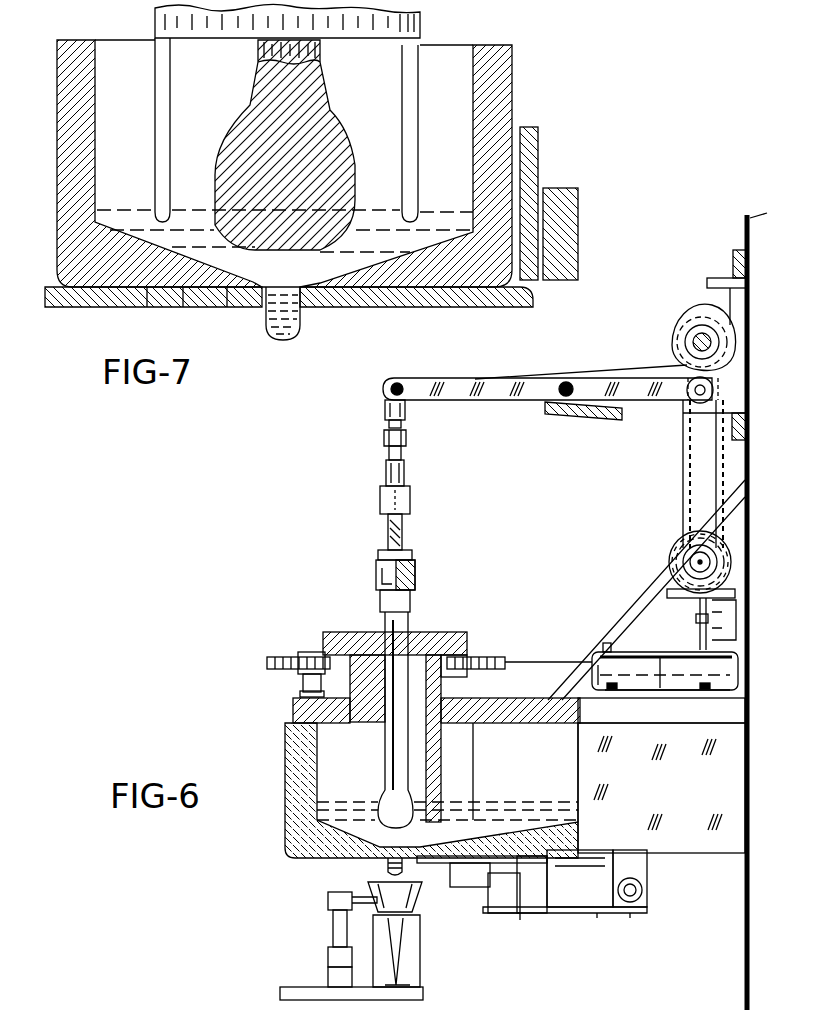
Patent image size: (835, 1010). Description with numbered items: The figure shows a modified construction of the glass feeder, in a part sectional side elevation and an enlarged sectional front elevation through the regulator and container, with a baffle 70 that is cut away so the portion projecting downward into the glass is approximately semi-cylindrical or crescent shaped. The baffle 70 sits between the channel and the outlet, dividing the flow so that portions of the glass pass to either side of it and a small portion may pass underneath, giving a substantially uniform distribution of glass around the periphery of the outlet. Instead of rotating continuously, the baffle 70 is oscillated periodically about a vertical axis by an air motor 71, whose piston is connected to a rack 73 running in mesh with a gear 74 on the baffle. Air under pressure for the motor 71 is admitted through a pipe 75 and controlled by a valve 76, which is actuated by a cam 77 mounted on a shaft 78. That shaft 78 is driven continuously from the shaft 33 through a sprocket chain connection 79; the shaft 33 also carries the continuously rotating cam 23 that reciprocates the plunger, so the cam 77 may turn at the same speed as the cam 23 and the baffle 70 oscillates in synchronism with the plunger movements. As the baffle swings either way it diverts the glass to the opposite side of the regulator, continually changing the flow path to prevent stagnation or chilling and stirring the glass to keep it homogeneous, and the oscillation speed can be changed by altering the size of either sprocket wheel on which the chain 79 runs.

In FIG. 7, the baffle 70 is at (419, 142).
In FIG. 6, the baffle 70 is at (442, 757).
In FIG. 6, the cam 23 is at (698, 316).
In FIG. 6, the shaft 33 is at (698, 342).
In FIG. 6, the sprocket chain connection 79 is at (683, 460).
In FIG. 6, the shaft 78 is at (700, 555).
In FIG. 6, the cam 77 is at (672, 560).
In FIG. 6, the valve 76 is at (696, 618).
In FIG. 6, the pipe 75 is at (724, 620).
In FIG. 6, the air motor 71 is at (655, 632).
In FIG. 6, the rack 73 is at (505, 660).
In FIG. 6, the gear 74 is at (445, 680).